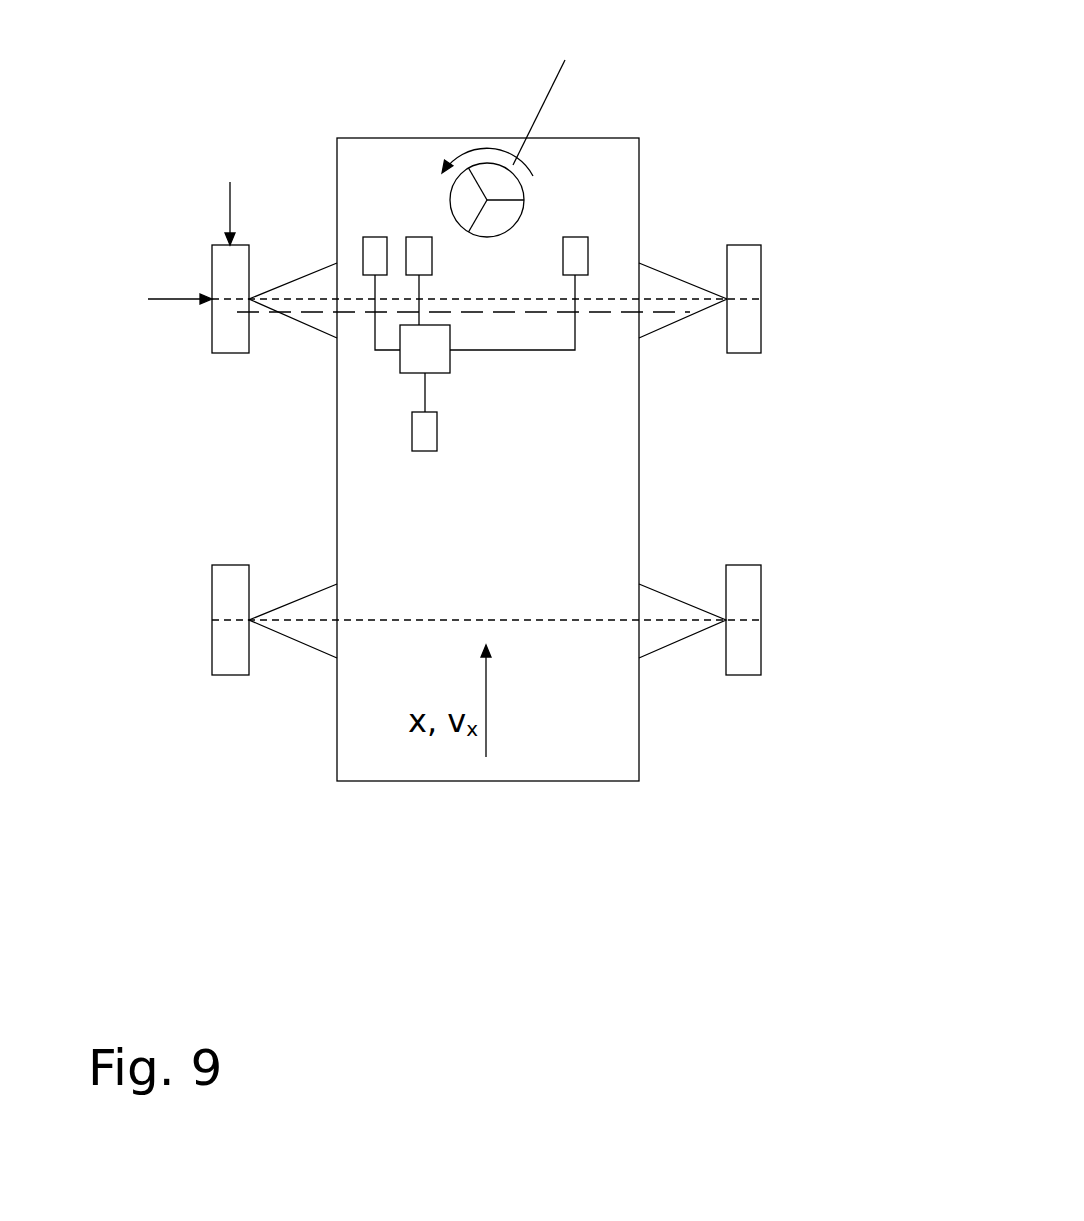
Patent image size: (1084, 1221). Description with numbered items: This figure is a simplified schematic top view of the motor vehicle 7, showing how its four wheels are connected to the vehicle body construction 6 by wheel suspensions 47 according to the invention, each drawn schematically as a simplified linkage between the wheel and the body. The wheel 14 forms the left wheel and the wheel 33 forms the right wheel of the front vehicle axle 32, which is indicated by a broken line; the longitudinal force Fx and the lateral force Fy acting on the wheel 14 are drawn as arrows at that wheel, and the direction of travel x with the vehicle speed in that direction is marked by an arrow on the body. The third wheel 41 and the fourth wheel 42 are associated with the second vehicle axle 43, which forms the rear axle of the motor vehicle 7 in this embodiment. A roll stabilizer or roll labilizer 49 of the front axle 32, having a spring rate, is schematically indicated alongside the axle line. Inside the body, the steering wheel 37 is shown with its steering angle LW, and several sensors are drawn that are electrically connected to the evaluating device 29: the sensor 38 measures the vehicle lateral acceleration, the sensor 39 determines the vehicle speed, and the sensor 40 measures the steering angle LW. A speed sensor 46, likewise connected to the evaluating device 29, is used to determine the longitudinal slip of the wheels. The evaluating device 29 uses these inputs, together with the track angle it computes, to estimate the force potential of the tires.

The vehicle body construction 6 is at (520, 783).
The motor vehicle 7 is at (305, 813).
The wheel 14 is at (222, 267).
The evaluating device 29 is at (420, 358).
The vehicle axle 32 is at (529, 393).
The wheel 33 is at (745, 263).
The steering wheel 37 is at (525, 188).
The sensor 38 is at (372, 253).
The sensor 39 is at (420, 253).
The sensor 40 is at (575, 255).
The third wheel 41 is at (223, 653).
The fourth wheel 42 is at (740, 652).
The second vehicle axle 43 is at (542, 622).
The speed sensor 46 is at (425, 437).
The wheel suspension 47 is at (307, 325).
The roll stabilizer 49 is at (544, 431).